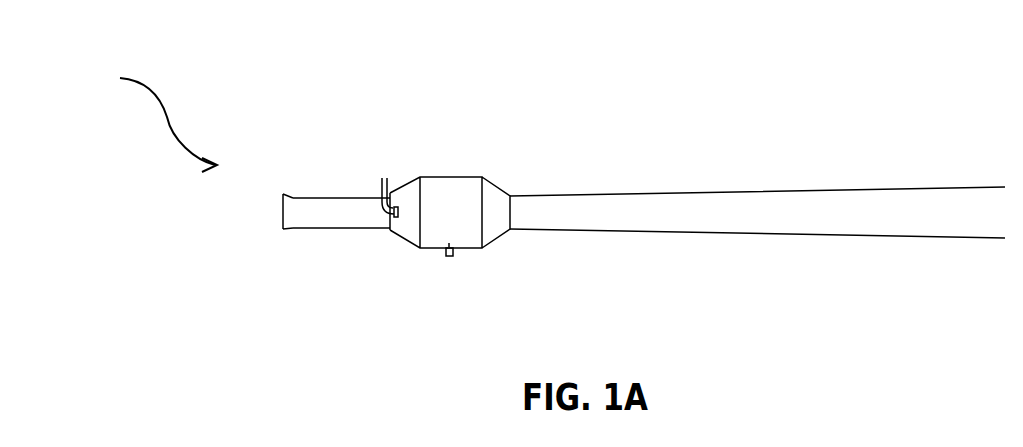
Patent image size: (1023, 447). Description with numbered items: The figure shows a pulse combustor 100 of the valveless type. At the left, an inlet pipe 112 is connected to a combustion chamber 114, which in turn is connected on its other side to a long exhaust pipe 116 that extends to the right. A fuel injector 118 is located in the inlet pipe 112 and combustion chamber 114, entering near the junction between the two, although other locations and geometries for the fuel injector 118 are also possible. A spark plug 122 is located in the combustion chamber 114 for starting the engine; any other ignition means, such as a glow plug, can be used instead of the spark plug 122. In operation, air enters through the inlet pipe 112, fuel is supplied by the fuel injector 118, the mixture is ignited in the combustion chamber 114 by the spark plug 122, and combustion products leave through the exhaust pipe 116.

The pulse combustor 100 is at (140, 111).
The inlet pipe 112 is at (318, 197).
The combustion chamber 114 is at (442, 177).
The exhaust pipe 116 is at (710, 192).
The fuel injector 118 is at (383, 177).
The spark plug 122 is at (448, 258).